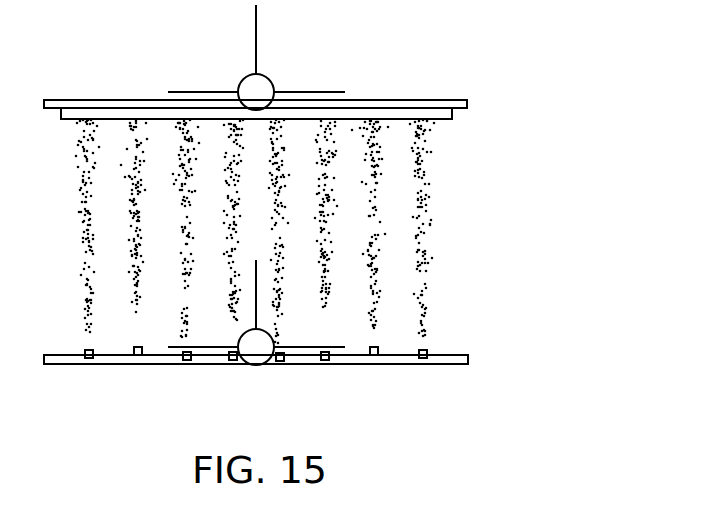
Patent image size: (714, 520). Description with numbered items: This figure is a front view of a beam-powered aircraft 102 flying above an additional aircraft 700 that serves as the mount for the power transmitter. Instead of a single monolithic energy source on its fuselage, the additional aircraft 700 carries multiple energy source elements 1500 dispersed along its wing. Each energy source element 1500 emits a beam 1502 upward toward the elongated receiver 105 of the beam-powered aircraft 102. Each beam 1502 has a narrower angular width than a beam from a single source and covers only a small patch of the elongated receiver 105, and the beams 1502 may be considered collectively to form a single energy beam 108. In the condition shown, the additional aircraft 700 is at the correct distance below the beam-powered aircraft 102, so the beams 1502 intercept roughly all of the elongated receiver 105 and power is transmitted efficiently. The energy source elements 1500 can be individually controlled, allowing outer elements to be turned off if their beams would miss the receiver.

The beam-powered aircraft 102 is at (467, 104).
The elongated receiver 105 is at (452, 117).
The energy beam 108 is at (515, 220).
The beams 1502 is at (420, 264).
The energy source elements 1500 is at (428, 350).
The additional aircraft 700 is at (468, 364).